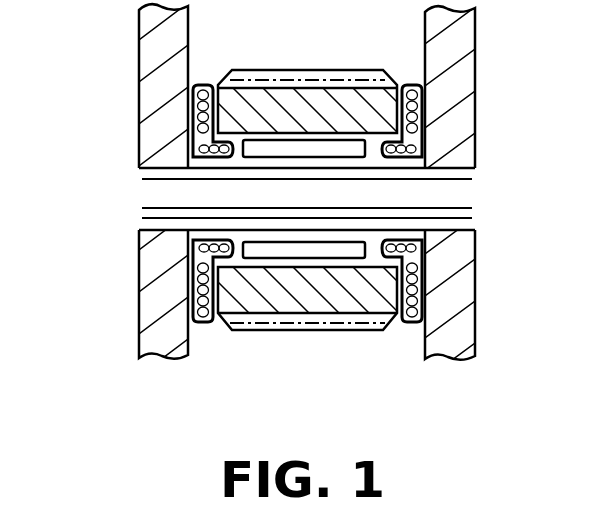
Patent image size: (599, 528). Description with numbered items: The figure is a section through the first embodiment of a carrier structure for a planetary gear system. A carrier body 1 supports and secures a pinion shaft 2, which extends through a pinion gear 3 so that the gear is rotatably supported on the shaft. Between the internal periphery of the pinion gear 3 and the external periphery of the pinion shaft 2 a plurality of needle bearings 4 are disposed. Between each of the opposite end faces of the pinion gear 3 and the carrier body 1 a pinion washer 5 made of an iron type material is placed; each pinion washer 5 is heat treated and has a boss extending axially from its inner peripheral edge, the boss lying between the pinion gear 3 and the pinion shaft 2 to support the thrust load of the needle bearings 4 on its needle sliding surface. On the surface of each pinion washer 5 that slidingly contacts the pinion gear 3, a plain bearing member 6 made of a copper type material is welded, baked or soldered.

The carrier body 1 is at (466, 100).
The pinion shaft 2 is at (141, 195).
The pinion gear 3 is at (289, 88).
The needle bearings 4 is at (331, 147).
The pinion washer 5 is at (198, 86).
The plain bearing member 6 is at (218, 278).